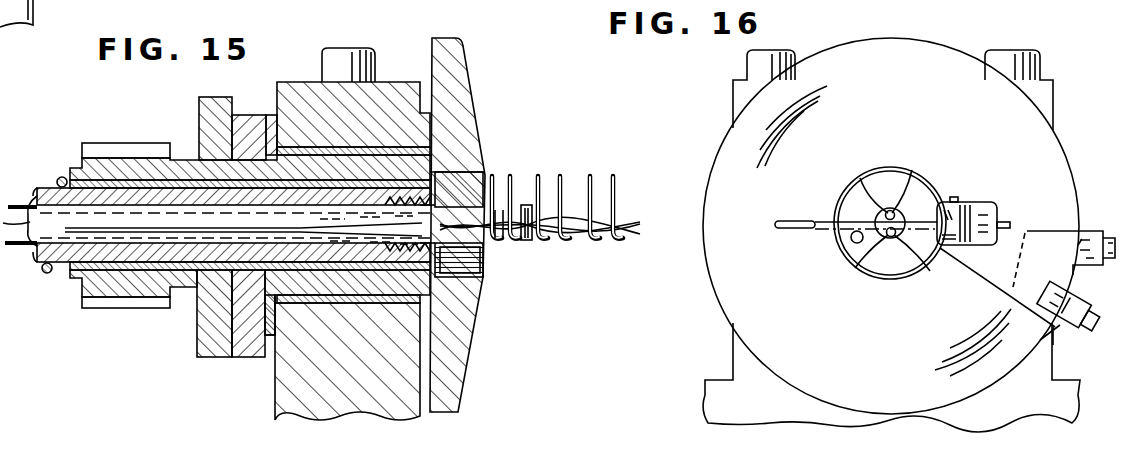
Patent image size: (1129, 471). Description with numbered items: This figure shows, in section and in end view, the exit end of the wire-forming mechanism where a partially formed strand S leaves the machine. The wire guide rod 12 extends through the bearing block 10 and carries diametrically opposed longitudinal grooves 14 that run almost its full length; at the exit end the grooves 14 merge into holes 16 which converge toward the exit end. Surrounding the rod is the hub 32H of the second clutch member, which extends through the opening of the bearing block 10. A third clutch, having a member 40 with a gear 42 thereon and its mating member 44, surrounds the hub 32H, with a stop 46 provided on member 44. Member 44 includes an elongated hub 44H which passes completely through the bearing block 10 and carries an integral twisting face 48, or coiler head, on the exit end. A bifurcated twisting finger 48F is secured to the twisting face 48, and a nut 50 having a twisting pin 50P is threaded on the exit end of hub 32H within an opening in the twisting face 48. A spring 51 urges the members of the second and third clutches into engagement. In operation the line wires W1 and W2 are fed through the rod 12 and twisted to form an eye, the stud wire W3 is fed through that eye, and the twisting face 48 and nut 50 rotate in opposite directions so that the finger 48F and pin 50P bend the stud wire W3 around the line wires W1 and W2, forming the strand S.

In FIG. 15, the bearing block 10 is at (391, 95).
In FIG. 16, the bearing block 10 is at (737, 97).
In FIG. 16, the wire guide rod 12 is at (905, 238).
In FIG. 15, the longitudinal grooves 14 is at (184, 173).
In FIG. 16, the holes 16 is at (891, 210).
In FIG. 15, the hub 32H is at (45, 190).
In FIG. 15, the clutch member 40 is at (211, 333).
In FIG. 15, the gear 42 is at (123, 143).
In FIG. 15, the clutch member 44 is at (250, 345).
In FIG. 15, the elongated hub 44H is at (333, 283).
In FIG. 15, the stop 46 is at (256, 97).
In FIG. 15, the twisting face 48 is at (470, 103).
In FIG. 16, the twisting face 48 is at (955, 106).
In FIG. 15, the bifurcated twisting finger 48F is at (530, 241).
In FIG. 16, the bifurcated twisting finger 48F is at (975, 205).
In FIG. 15, the nut 50 is at (470, 258).
In FIG. 16, the nut 50 is at (925, 191).
In FIG. 15, the twisting pin 50P is at (490, 252).
In FIG. 16, the twisting pin 50P is at (852, 242).
In FIG. 15, the spring 51 is at (49, 276).
In FIG. 15, the strand S is at (601, 250).
In FIG. 15, the line wire W1 is at (20, 200).
In FIG. 16, the line wire W1 is at (862, 183).
In FIG. 15, the line wire W2 is at (15, 248).
In FIG. 16, the line wire W2 is at (860, 272).
In FIG. 15, the stud wire W3 is at (610, 182).
In FIG. 16, the stud wire W3 is at (803, 221).